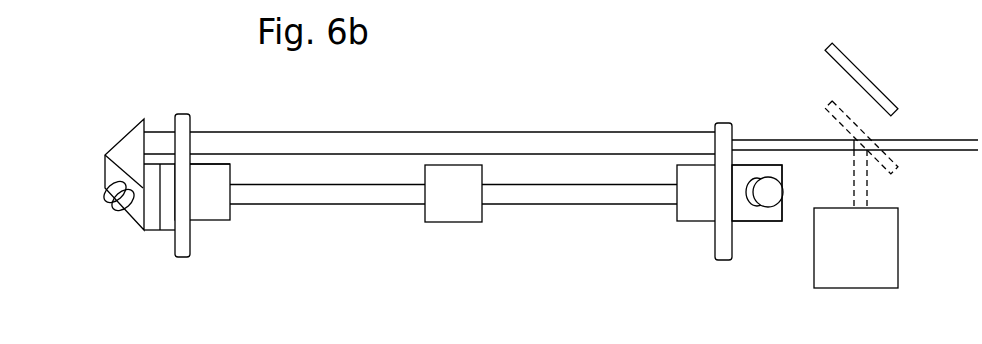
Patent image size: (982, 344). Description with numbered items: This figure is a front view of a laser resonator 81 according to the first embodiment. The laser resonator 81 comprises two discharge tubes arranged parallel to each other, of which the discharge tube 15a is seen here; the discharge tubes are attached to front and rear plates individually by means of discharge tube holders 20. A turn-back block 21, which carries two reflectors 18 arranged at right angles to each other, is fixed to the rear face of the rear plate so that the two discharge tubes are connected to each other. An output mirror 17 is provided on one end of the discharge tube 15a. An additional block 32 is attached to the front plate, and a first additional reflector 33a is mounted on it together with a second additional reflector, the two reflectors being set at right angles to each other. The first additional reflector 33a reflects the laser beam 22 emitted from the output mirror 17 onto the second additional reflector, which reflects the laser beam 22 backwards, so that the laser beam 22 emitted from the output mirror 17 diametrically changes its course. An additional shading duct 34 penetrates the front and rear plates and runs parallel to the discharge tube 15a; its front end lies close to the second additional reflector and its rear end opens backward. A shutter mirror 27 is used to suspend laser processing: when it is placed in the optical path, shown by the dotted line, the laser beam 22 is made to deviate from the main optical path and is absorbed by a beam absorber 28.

The additional block 32 is at (130, 150).
The first additional reflector 33a is at (110, 207).
The additional shading duct 34 is at (383, 130).
The output mirror 17 is at (168, 223).
The discharge tube holder 20 is at (207, 213).
The discharge tube 15a is at (358, 197).
The laser resonator 81 is at (604, 119).
The reflector 18 is at (763, 212).
The turn-back block 21 is at (772, 218).
The shutter mirror 27 is at (863, 75).
The laser beam 22 is at (932, 138).
The beam absorber 28 is at (888, 262).